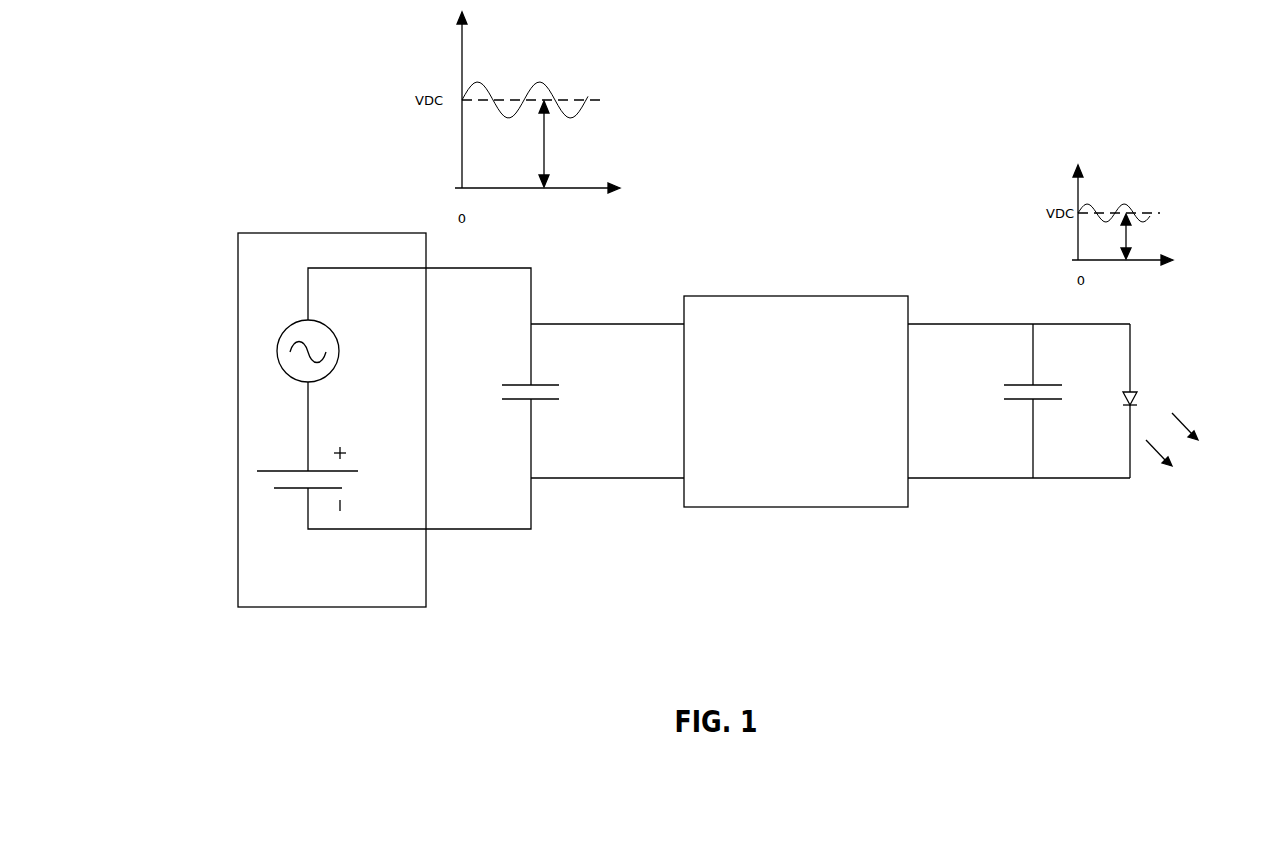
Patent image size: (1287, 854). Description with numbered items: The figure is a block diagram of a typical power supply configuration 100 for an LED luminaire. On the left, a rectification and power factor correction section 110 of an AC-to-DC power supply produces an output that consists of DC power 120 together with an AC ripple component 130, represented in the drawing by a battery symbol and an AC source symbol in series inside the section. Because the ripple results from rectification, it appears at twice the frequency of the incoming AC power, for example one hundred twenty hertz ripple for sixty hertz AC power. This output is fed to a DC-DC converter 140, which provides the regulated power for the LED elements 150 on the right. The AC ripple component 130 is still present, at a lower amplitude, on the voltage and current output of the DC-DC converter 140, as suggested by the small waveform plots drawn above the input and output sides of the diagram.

The power supply configuration 100 is at (153, 142).
The rectification and power factor correction section 110 is at (317, 595).
The DC power 120 is at (277, 470).
The AC ripple component 130 is at (278, 348).
The DC-DC converter 140 is at (779, 427).
The LED elements 150 is at (1176, 396).